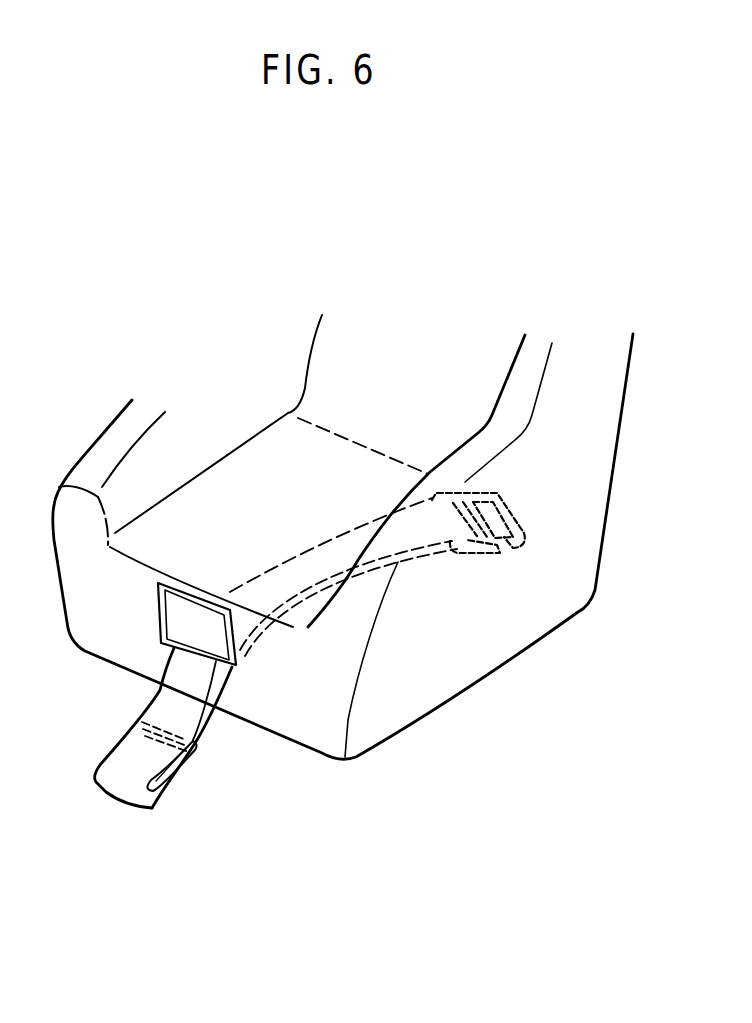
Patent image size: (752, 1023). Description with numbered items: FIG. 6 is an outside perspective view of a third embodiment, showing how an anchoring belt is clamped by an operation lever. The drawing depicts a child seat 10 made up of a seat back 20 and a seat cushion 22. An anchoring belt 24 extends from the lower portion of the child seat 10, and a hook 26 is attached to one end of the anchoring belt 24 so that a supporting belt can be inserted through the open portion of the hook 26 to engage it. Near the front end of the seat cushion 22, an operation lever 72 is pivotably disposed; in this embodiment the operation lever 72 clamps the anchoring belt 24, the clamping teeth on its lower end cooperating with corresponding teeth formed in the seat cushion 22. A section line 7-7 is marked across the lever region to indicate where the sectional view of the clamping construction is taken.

The child seat 10 is at (255, 302).
The seat back 20 is at (360, 368).
The seat cushion 22 is at (236, 483).
The anchoring belt 24 is at (130, 772).
The hook 26 is at (518, 553).
The operation lever 72 is at (166, 626).
The section line 7- 7 is at (227, 588).